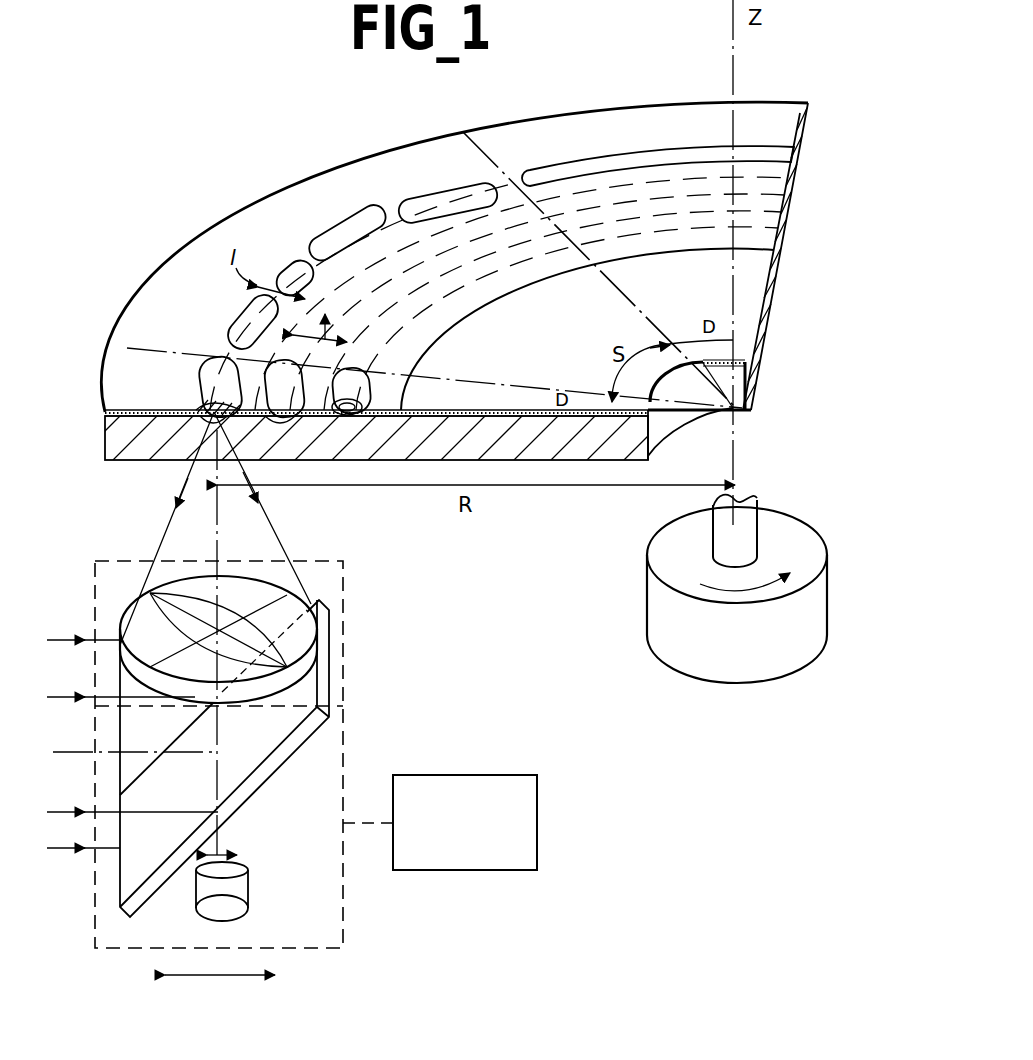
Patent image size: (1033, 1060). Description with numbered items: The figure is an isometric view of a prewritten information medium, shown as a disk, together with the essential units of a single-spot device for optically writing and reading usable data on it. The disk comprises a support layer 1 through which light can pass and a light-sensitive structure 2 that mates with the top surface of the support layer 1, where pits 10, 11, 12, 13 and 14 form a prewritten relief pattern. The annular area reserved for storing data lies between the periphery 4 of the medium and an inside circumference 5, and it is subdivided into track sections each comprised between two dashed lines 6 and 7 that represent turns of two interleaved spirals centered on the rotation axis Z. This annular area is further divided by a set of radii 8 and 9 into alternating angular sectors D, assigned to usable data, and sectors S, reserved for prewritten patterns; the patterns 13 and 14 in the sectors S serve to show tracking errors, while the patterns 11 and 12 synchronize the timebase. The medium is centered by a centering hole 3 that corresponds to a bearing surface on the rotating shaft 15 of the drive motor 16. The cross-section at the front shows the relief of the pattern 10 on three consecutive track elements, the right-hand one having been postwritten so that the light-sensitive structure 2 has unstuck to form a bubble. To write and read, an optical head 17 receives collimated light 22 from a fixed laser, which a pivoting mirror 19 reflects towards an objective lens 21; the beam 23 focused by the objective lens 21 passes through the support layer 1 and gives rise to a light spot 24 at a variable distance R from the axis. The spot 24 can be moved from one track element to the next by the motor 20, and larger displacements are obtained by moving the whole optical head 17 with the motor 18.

The support layer 1 is at (150, 462).
The light-sensitive structure 2 is at (140, 410).
The centering hole 3 is at (663, 430).
The periphery 4 is at (196, 262).
The inside circumference 5 is at (440, 333).
The dashed line 6 is at (400, 207).
The dashed line 7 is at (357, 310).
The radius 8 is at (133, 347).
The radius 9 is at (477, 137).
The pit 10 is at (203, 384).
The pit 11 is at (237, 314).
The pit 12 is at (283, 273).
The pit 13 is at (337, 218).
The pit 14 is at (443, 192).
The rotating shaft 15 is at (758, 502).
The drive motor 16 is at (667, 533).
The optical head 17 is at (343, 583).
The motor 18 is at (470, 775).
The pivoting mirror 19 is at (270, 777).
The motor 20 is at (240, 884).
The objective lens 21 is at (197, 585).
The collimated light 22 is at (60, 640).
The focused beam 23 is at (172, 530).
The light spot 24 is at (197, 410).